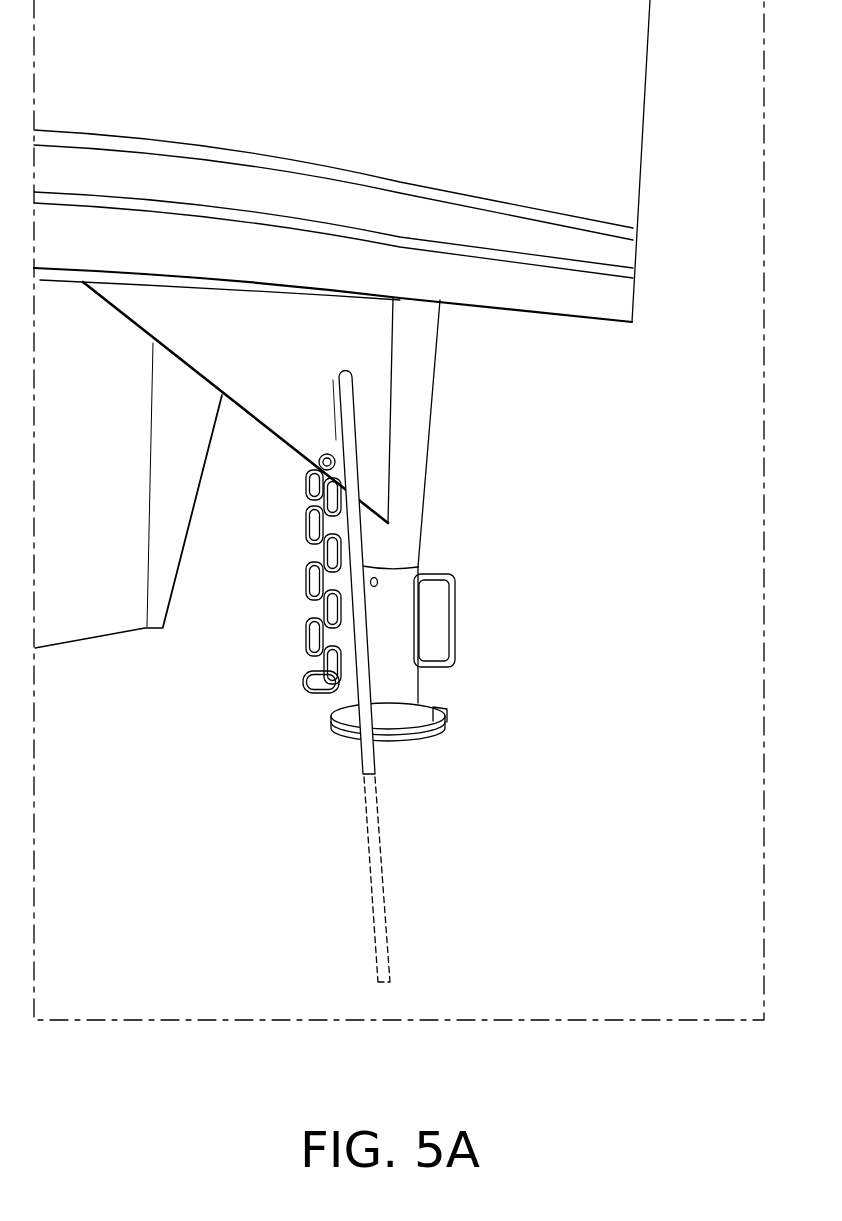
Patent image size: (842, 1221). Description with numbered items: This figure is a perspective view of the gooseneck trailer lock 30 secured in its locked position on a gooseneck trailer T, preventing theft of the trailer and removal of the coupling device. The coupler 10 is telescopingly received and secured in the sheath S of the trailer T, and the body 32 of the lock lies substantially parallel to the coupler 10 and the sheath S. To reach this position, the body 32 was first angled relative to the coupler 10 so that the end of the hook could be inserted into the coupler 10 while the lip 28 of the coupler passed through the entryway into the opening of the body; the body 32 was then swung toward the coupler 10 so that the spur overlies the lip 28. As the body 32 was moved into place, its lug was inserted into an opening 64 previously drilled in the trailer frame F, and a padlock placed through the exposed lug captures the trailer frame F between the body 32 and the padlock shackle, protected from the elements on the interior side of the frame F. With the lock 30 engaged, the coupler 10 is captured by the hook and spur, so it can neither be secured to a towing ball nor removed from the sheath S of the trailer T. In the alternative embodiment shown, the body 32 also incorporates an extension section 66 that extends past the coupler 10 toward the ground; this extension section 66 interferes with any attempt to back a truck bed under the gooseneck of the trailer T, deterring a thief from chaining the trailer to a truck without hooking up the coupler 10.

The gooseneck trailer T is at (689, 92).
The trailer frame F is at (198, 328).
The sheath S is at (405, 486).
The coupler 10 is at (487, 684).
The lip 28 is at (313, 741).
The gooseneck trailer lock 30 is at (238, 618).
The body 32 is at (342, 430).
The opening 64 is at (351, 374).
The extension section 66 is at (387, 901).